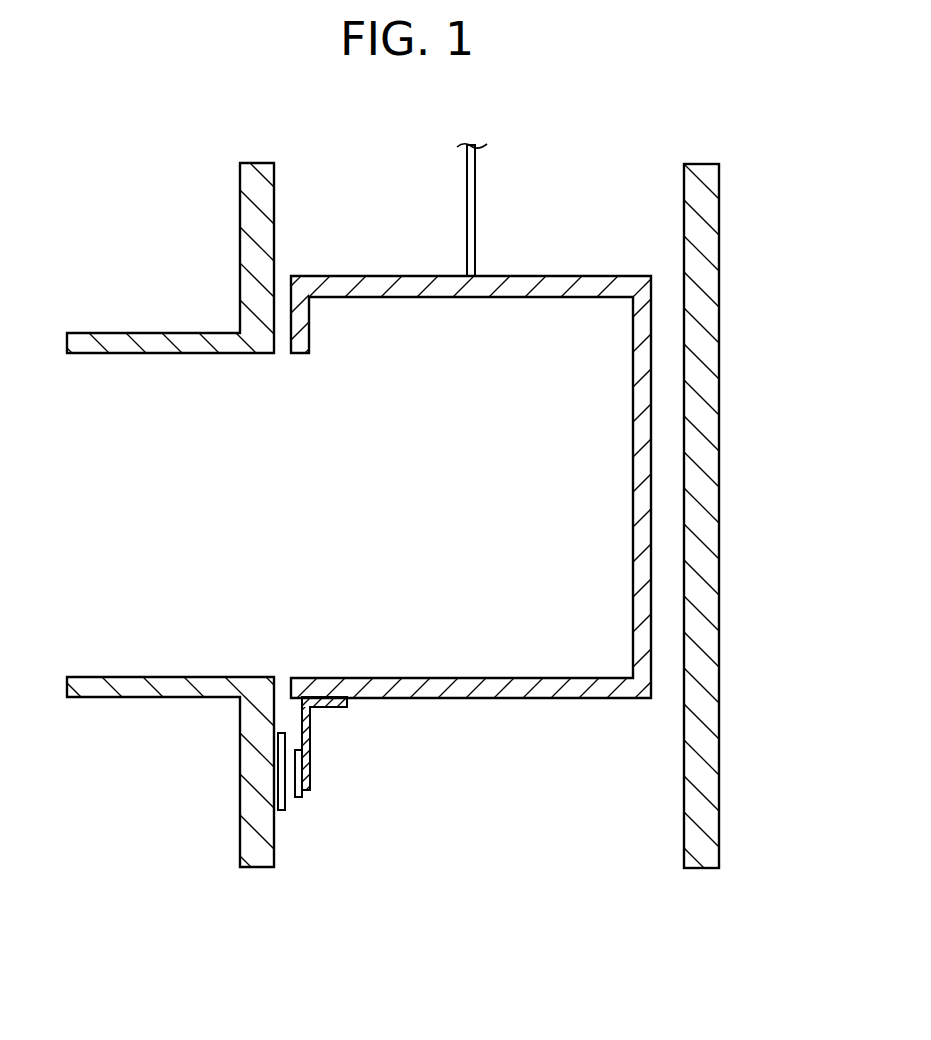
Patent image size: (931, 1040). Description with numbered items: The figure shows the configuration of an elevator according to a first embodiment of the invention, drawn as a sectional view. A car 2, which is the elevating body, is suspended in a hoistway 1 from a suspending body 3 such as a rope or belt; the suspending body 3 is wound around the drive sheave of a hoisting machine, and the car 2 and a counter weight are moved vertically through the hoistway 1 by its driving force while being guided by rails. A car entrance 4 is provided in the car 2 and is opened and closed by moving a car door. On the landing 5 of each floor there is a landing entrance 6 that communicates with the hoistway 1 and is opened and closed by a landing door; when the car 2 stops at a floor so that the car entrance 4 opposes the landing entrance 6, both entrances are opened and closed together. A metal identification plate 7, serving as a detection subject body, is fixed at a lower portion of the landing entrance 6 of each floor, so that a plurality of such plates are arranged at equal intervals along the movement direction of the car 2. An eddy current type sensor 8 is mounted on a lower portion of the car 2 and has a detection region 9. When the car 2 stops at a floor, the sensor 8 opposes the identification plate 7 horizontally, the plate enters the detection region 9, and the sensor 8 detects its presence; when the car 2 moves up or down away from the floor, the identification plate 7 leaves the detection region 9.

The hoistway 1 is at (650, 828).
The car 2 is at (533, 698).
The suspending body 3 is at (477, 200).
The car entrance 4 is at (310, 515).
The landing 5 is at (125, 398).
The landing entrance 6 is at (242, 515).
The identification plate 7 is at (282, 813).
The eddy current type sensor 8 is at (303, 795).
The detection region 9 is at (292, 803).